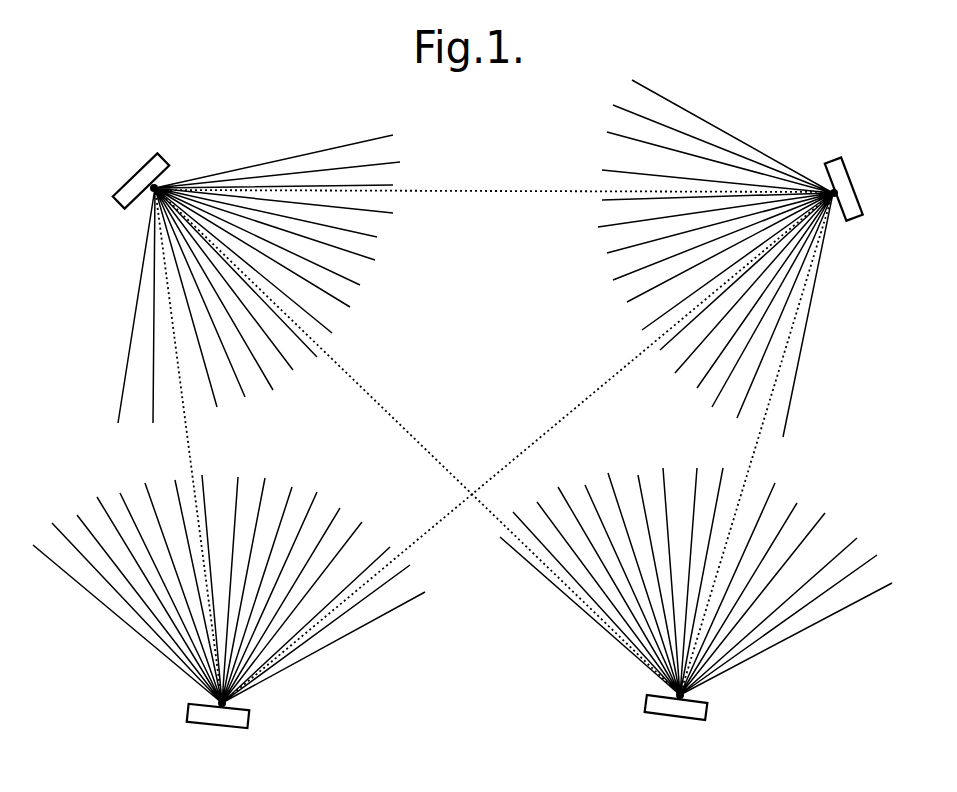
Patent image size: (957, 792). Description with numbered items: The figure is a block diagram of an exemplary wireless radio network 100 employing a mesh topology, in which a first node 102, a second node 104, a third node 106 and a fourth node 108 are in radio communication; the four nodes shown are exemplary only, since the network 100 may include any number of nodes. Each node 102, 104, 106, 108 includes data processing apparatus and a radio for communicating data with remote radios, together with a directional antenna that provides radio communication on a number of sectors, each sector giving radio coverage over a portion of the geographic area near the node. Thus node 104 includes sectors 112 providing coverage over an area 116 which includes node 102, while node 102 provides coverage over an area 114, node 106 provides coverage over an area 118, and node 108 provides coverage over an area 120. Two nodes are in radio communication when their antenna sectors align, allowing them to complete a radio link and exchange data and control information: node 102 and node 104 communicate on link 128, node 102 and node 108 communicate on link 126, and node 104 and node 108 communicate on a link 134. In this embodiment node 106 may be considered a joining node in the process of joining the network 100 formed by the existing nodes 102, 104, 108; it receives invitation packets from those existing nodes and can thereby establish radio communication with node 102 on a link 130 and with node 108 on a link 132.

The wireless radio network 100 is at (483, 666).
The first node 102 is at (893, 170).
The second node 104 is at (682, 720).
The third node 106 is at (220, 728).
The fourth node 108 is at (137, 175).
The sectors 112 is at (840, 613).
The area 114 is at (830, 296).
The area 116 is at (772, 666).
The area 118 is at (318, 670).
The area 120 is at (130, 276).
The link 126 is at (527, 190).
The link 128 is at (757, 457).
The link 130 is at (607, 383).
The link 132 is at (185, 450).
The link 134 is at (390, 417).